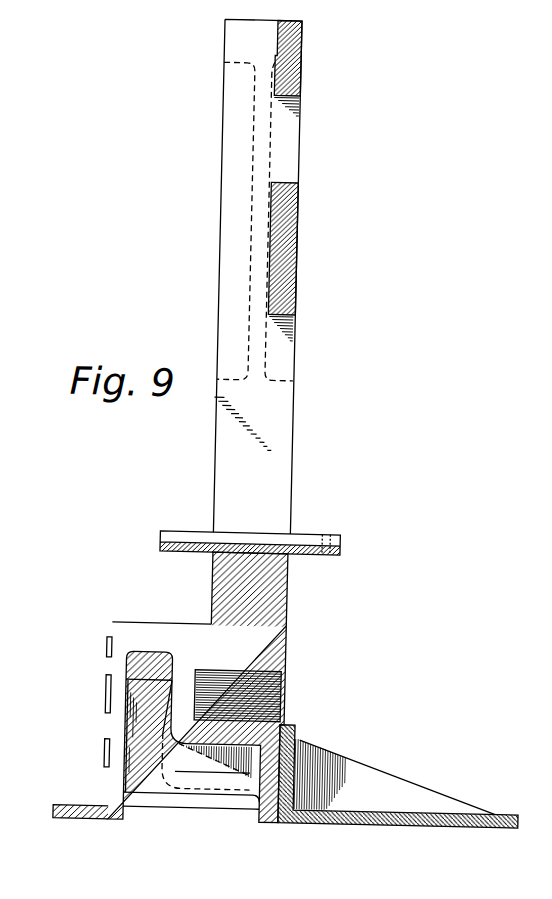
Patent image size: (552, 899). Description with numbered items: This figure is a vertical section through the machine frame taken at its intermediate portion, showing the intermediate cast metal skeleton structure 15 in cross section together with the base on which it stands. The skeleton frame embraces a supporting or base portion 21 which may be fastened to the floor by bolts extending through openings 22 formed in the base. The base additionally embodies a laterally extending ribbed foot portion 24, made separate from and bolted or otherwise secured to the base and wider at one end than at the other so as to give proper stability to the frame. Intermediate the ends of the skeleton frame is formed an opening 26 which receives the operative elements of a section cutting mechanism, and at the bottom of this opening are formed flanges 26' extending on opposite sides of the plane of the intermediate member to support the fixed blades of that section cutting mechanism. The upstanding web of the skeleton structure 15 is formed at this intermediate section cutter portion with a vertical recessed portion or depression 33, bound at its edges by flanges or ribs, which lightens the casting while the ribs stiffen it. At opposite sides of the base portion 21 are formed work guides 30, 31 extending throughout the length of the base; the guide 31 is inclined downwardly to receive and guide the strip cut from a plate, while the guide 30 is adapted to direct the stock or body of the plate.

The intermediate cast metal skeleton structure 15 is at (291, 276).
The vertical recessed portion 33 is at (230, 254).
The opening 26 is at (275, 277).
The flanges 26' is at (275, 534).
The work guide 30 is at (213, 617).
The work guide 31 is at (281, 688).
The base portion 21 is at (116, 720).
The openings 22 is at (74, 808).
The ribbed foot portion 24 is at (436, 810).